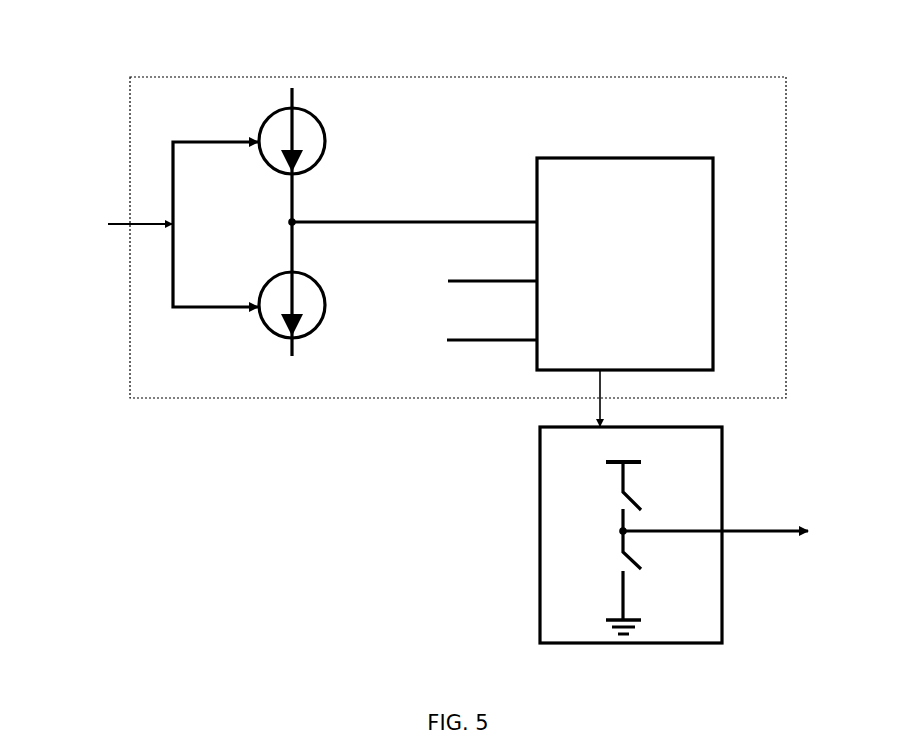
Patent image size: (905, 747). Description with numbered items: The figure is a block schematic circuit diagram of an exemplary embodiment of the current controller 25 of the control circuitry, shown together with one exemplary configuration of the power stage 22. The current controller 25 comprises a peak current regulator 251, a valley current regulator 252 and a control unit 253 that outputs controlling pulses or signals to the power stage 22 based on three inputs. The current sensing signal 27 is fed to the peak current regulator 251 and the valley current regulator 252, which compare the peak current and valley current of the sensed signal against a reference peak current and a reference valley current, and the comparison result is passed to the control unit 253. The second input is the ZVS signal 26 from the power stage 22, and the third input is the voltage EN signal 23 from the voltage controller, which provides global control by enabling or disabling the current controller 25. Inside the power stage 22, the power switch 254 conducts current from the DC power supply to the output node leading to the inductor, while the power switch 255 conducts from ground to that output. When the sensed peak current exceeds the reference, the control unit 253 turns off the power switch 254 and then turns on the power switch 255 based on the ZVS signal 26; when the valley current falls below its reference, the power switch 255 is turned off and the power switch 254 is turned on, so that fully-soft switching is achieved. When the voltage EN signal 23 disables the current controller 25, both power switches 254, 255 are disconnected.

The current controller 25 is at (124, 72).
The current sensing signal 27 is at (63, 268).
The peak current regulator 251 is at (258, 106).
The valley current regulator 252 is at (258, 340).
The ZVS signal 26 is at (415, 262).
The control unit 253 is at (613, 152).
The voltage EN signal 23 is at (378, 360).
The power stage 22 is at (704, 535).
The power switch 254 is at (655, 490).
The power switch 255 is at (655, 583).